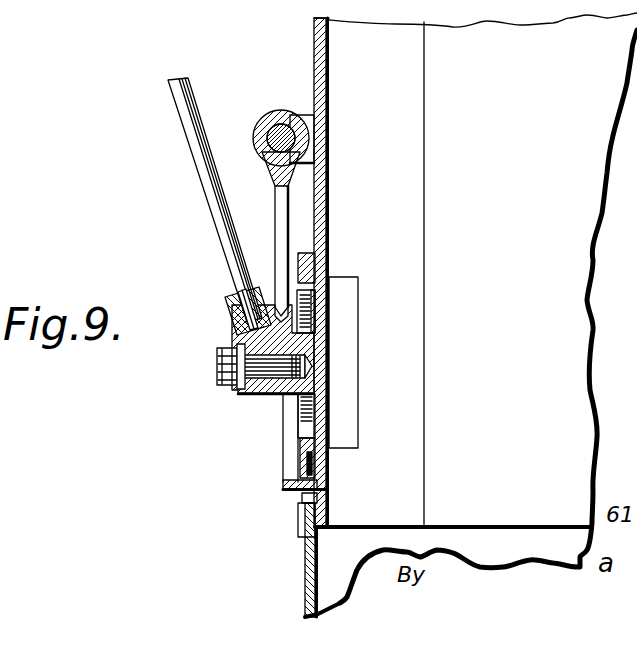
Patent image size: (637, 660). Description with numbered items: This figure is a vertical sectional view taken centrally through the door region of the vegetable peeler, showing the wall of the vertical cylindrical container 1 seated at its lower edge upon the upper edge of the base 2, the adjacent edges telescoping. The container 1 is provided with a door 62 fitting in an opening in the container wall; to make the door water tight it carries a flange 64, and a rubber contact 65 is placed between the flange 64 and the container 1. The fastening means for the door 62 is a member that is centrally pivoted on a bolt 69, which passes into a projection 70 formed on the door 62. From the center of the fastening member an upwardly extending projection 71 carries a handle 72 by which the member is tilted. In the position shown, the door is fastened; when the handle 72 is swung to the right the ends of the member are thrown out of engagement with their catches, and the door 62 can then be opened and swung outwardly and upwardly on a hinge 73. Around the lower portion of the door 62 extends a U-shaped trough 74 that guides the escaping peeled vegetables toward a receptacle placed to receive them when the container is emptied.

The vertical cylindrical container 1 is at (328, 89).
The base 2 is at (305, 578).
The door 62 is at (326, 293).
The flange 64 is at (302, 267).
The rubber contact 65 is at (327, 262).
The bolt 69 is at (217, 368).
The projection 70 is at (326, 345).
The upwardly extending projection 71 is at (233, 310).
The handle 72 is at (200, 171).
The hinge 73 is at (262, 128).
The U-shaped trough 74 is at (278, 482).